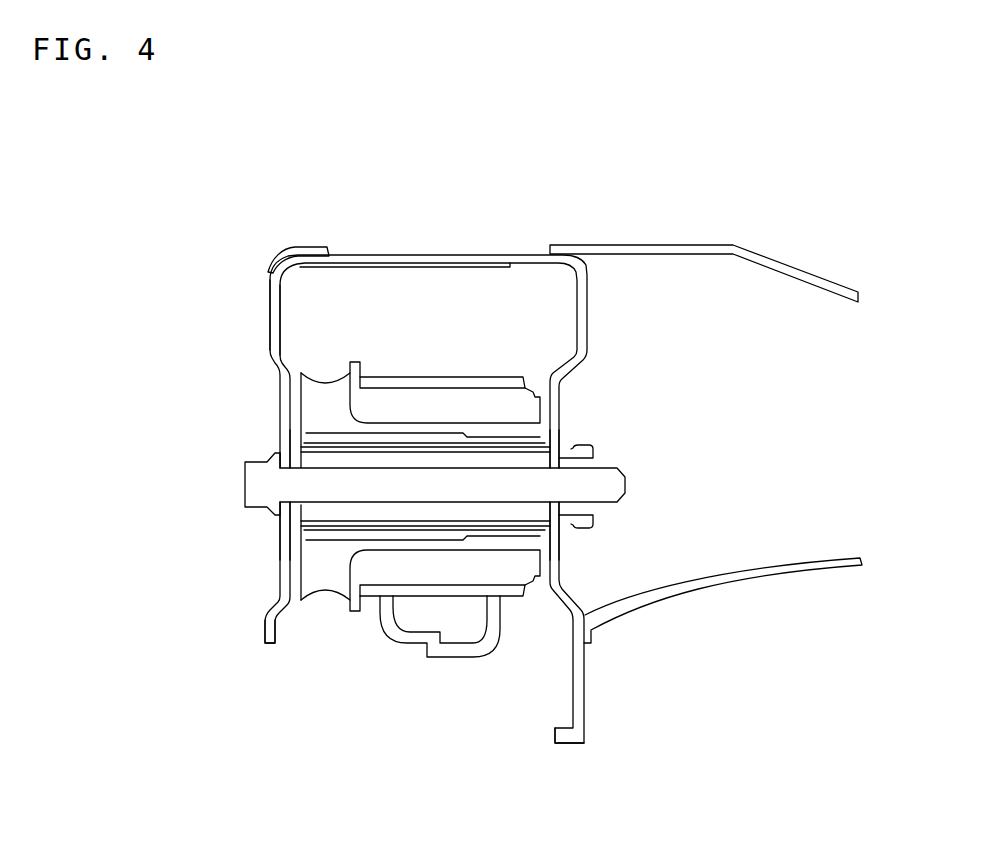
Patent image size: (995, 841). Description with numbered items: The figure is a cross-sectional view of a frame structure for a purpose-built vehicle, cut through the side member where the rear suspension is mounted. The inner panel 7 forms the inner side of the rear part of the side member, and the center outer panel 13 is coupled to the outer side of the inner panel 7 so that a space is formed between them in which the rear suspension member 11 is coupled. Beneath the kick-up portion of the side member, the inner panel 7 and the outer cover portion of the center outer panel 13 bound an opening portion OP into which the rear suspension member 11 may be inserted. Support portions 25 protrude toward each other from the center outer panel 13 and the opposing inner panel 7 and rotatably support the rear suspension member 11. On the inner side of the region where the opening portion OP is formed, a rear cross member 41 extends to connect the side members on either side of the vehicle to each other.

The inner panel 7 is at (588, 305).
The rear suspension member 11 is at (417, 356).
The center outer panel 13 is at (272, 318).
The support portions 25 is at (280, 538).
The rear cross member 41 is at (680, 250).
The opening portion OP is at (557, 743).